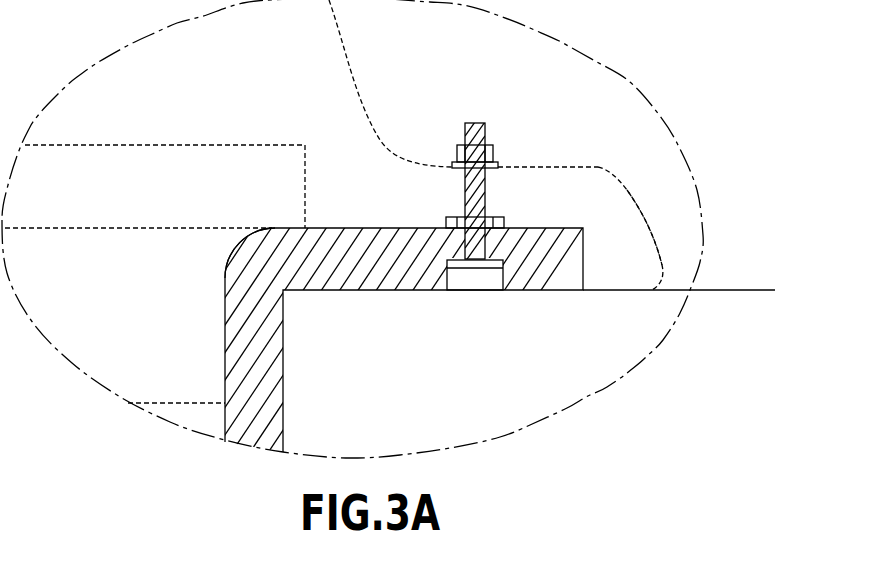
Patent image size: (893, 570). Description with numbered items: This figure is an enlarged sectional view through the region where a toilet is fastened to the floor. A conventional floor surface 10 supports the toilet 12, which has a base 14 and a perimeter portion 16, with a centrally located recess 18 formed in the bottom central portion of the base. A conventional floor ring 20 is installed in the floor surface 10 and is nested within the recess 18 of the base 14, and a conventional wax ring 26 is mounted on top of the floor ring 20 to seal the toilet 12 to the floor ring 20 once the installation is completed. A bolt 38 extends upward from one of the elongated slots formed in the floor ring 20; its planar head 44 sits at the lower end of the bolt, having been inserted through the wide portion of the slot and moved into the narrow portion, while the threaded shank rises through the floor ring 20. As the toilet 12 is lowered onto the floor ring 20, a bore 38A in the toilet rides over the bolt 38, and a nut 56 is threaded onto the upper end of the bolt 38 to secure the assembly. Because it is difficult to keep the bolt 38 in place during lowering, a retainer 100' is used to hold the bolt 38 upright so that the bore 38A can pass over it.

The floor surface 10 is at (738, 290).
The toilet 12 is at (353, 48).
The base 14 is at (602, 170).
The perimeter portion 16 is at (641, 218).
The recess 18 is at (354, 229).
The floor ring 20 is at (222, 273).
The wax ring 26 is at (212, 145).
The bolt 38 is at (481, 121).
The bore 38A is at (488, 185).
The planar head 44 is at (478, 268).
The nut 56 is at (480, 153).
The retainer 100' is at (510, 208).